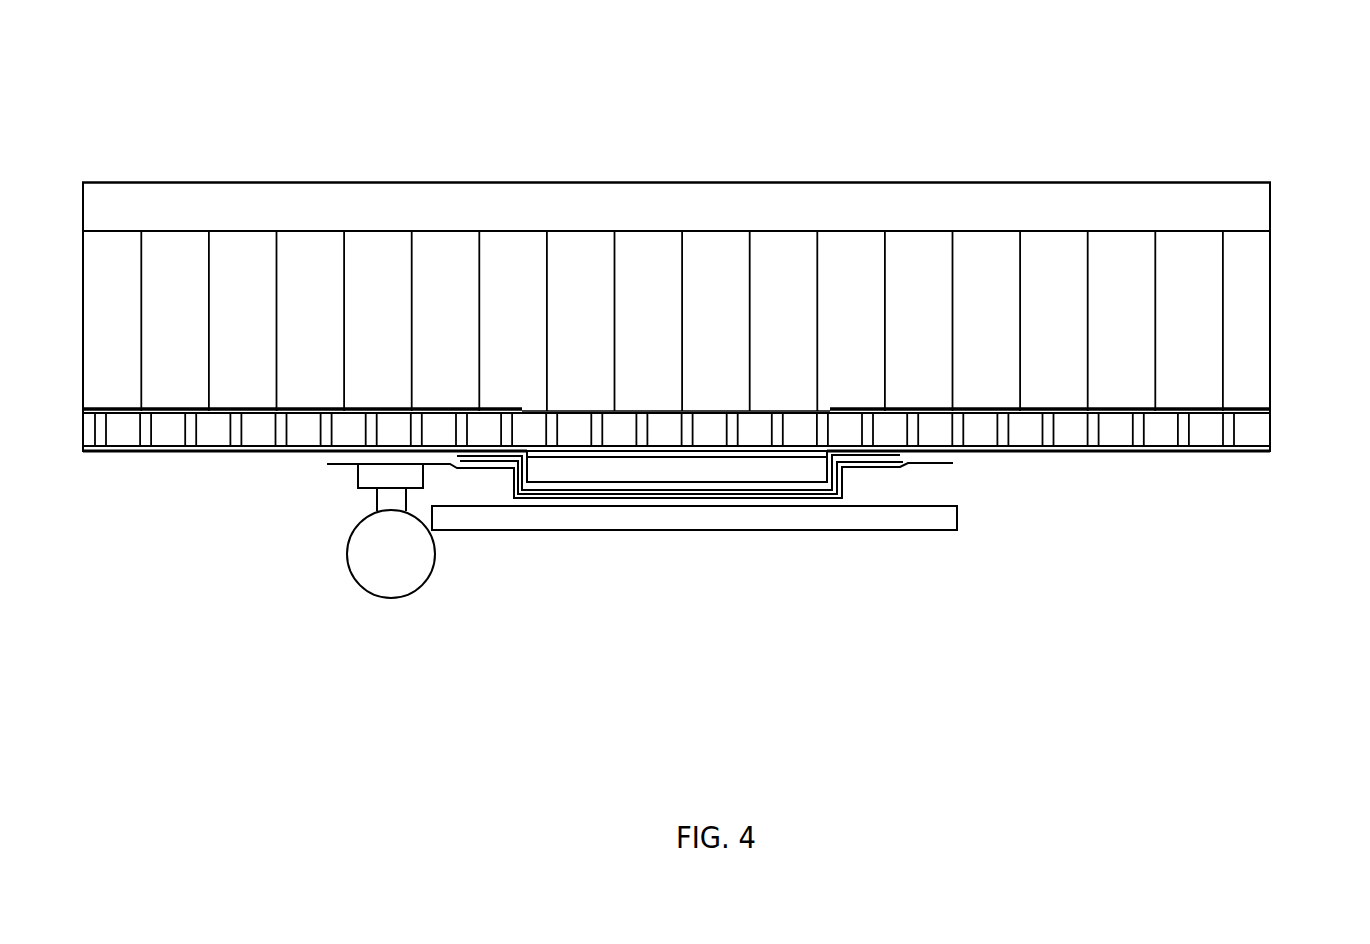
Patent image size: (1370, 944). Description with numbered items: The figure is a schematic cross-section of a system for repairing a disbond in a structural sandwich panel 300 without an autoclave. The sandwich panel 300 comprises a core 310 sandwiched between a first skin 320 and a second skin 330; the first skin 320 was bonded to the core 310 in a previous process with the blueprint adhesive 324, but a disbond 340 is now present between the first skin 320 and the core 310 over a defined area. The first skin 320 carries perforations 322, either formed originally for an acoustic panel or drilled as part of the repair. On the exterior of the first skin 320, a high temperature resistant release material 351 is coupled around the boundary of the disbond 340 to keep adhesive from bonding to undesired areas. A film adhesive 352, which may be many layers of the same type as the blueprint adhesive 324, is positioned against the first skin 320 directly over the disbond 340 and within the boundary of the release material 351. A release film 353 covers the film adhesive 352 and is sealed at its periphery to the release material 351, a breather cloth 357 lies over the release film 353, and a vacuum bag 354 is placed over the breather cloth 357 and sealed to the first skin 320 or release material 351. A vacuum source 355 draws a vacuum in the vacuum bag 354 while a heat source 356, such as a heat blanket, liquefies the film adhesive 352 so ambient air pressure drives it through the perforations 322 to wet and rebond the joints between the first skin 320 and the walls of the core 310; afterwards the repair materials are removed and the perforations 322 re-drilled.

The sandwich panel 300 is at (1111, 114).
The core 310 is at (1270, 327).
The first skin 320 is at (726, 474).
The perforations 322 is at (1143, 430).
The blueprint adhesive 324 is at (397, 408).
The second skin 330 is at (1270, 206).
The disbond 340 is at (662, 372).
The high temperature resistant release material 351 is at (171, 452).
The film adhesive 352 is at (717, 480).
The release film 353 is at (628, 485).
The vacuum bag 354 is at (548, 498).
The vacuum source 355 is at (387, 599).
The heat source 356 is at (885, 530).
The breather cloth 357 is at (790, 493).